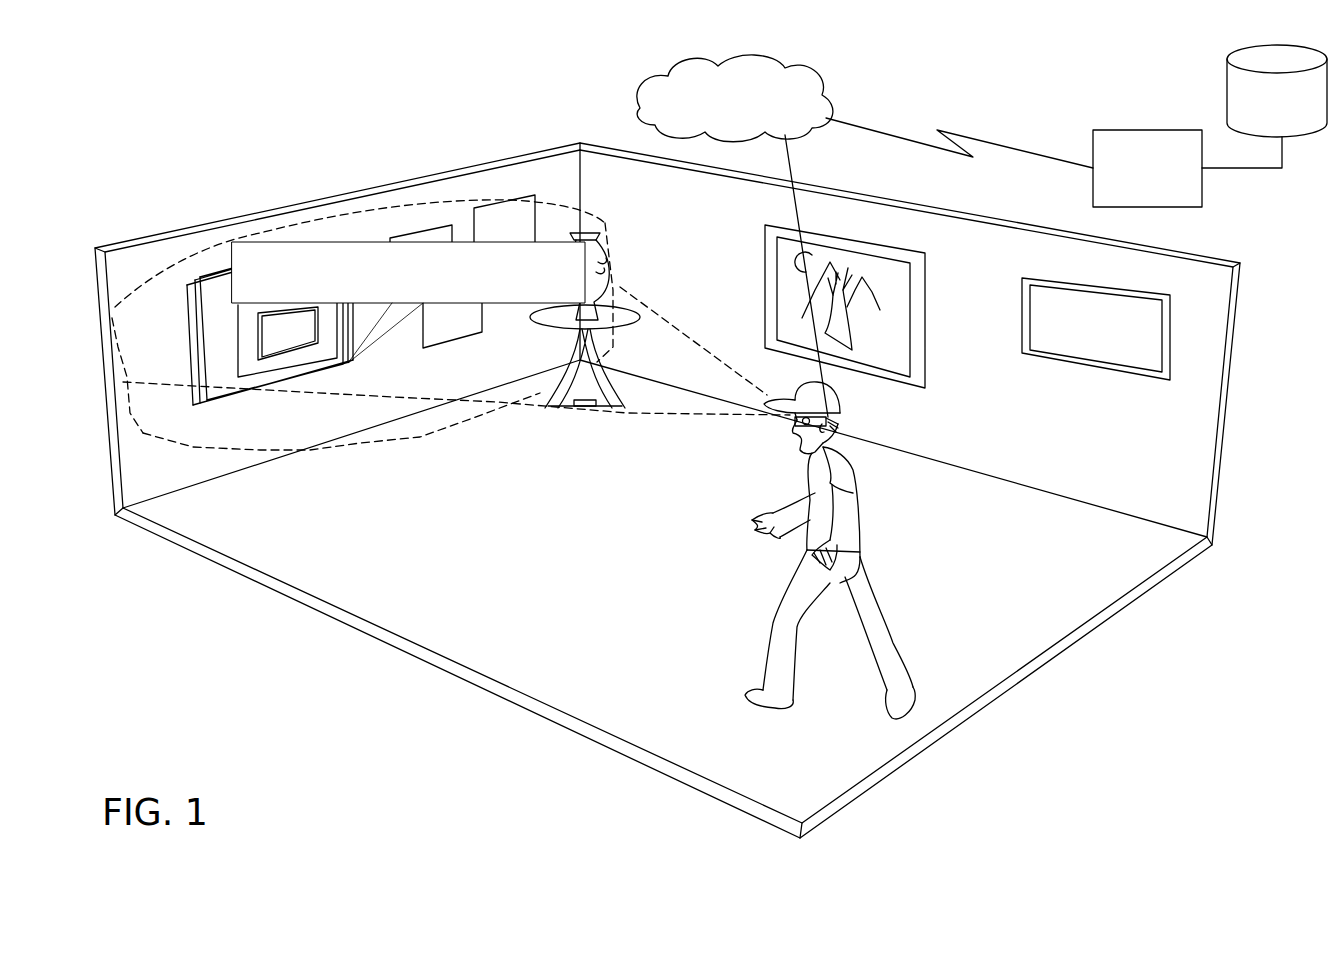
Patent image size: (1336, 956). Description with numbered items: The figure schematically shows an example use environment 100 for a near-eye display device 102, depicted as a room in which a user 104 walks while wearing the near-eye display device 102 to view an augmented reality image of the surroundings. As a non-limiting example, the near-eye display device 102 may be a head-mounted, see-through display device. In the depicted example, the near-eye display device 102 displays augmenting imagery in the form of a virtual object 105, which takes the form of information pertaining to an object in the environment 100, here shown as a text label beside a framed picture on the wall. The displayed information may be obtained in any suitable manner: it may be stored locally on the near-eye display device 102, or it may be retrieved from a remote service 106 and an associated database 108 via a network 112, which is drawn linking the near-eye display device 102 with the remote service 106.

The use environment 100 is at (186, 115).
The near-eye display device 102 is at (833, 415).
The user 104 is at (855, 527).
The virtual object 105 is at (360, 241).
The remote service 106 is at (1147, 168).
The database 108 is at (1277, 91).
The network 112 is at (735, 98).